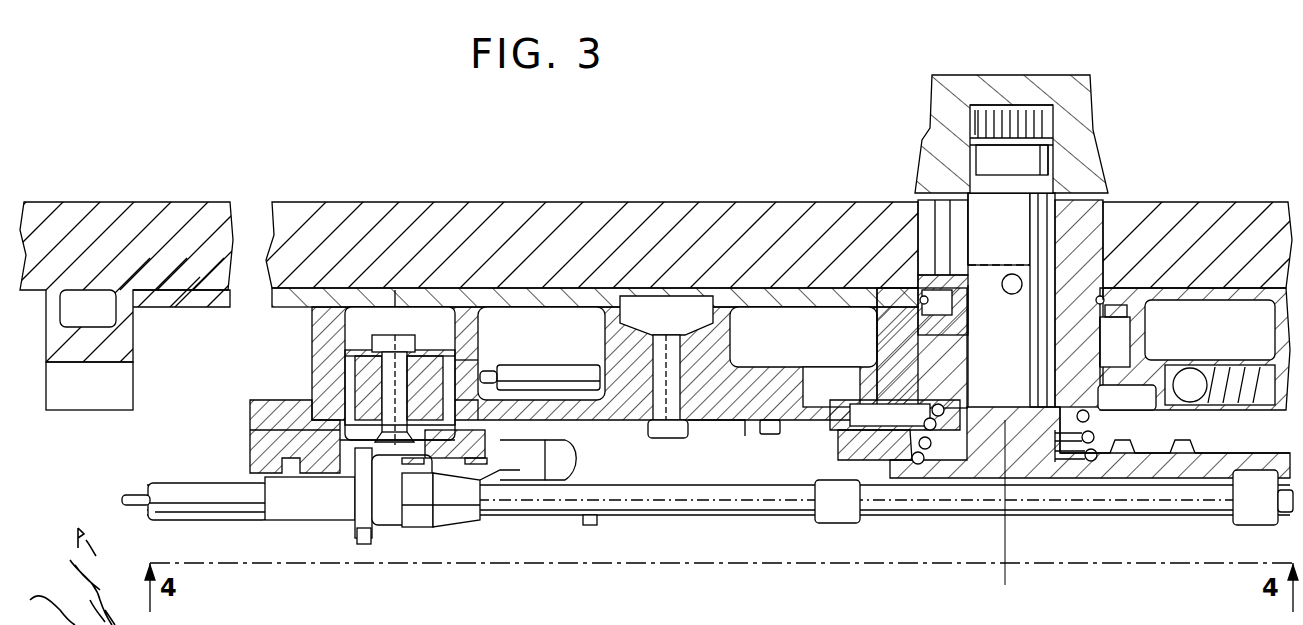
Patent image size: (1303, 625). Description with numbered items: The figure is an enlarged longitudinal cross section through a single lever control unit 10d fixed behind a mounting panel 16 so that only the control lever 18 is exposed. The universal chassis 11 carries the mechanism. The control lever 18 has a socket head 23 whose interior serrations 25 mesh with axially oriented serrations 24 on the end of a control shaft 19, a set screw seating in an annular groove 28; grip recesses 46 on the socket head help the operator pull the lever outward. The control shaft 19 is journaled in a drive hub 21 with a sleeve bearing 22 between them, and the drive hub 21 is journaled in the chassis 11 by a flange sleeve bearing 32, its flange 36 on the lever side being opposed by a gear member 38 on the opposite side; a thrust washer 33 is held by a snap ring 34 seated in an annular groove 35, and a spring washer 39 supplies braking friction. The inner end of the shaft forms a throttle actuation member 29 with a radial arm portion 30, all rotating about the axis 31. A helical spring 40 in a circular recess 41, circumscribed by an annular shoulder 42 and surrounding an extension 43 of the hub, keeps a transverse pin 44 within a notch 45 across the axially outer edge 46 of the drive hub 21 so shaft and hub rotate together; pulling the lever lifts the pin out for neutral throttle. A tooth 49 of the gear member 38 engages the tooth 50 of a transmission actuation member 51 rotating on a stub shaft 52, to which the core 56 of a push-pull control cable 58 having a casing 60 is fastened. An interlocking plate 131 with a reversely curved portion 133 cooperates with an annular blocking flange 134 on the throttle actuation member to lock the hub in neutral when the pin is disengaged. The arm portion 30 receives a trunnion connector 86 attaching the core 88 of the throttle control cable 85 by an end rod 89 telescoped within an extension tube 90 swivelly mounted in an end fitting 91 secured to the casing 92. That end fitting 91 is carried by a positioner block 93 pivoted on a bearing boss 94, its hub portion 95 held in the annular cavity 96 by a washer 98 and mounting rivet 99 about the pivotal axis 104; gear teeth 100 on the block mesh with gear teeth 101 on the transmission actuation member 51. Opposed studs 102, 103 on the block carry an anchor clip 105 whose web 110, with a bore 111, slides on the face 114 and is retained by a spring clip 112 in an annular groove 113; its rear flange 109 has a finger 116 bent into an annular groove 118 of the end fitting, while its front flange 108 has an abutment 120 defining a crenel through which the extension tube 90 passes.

The control unit 10d is at (745, 518).
The universal chassis 11 is at (520, 288).
The mounting panel 16 is at (735, 220).
The control lever 18 is at (1015, 72).
The control shaft 19 is at (1011, 300).
The drive hub 21 is at (967, 330).
The sleeve bearing 22 is at (1062, 270).
The socket head 23 is at (1082, 98).
The serrations 24 is at (1048, 127).
The serrations 25 is at (972, 118).
The annular groove 28 is at (1052, 167).
The throttle actuation member 29 is at (965, 482).
The throttle actuating arm portion 30 is at (1212, 482).
The axis 31 is at (1012, 550).
The flange sleeve bearing 32 is at (1132, 344).
The thrust washer 33 is at (1127, 313).
The snap ring 34 is at (1103, 300).
The annular groove 35 is at (943, 305).
The flange 36 is at (1108, 320).
The gear member 38 is at (903, 377).
The spring washer 39 is at (1186, 389).
The helical spring 40 is at (1094, 430).
The circular recess 41 is at (1075, 492).
The annular shoulder 42 is at (1140, 440).
The extension 43 is at (1058, 434).
The pin 44 is at (1006, 294).
The notch 45 is at (1031, 300).
The axially outer edge 46 is at (924, 144).
The tooth 49 is at (790, 434).
The tooth 50 is at (865, 380).
The transmission actuation member 51 is at (760, 406).
The stub shaft 52 is at (690, 426).
The core 56 is at (525, 372).
The push-pull control cable 58 is at (585, 360).
The casing 60 is at (540, 360).
The push-pull throttle control cable 85 is at (176, 518).
The trunnion connector 86 is at (1265, 524).
The core 88 is at (135, 494).
The end rod 89 is at (980, 502).
The extension tube 90 is at (632, 502).
The end fitting 91 is at (300, 512).
The casing 92 is at (178, 483).
The positioner block 93 is at (345, 444).
The bearing boss 94 is at (345, 395).
The hub portion 95 is at (370, 380).
The annular cavity 96 is at (460, 366).
The washer 98 is at (362, 345).
The mounting rivet 99 is at (398, 345).
The gear teeth 100 is at (560, 366).
The gear teeth 101 is at (500, 412).
The stud 102 is at (495, 502).
The stud 103 is at (275, 454).
The pivotal axis 104 is at (393, 302).
The anchor clip 105 is at (563, 452).
The front flange 108 is at (582, 478).
The rear flange 109 is at (365, 472).
The web 110 is at (425, 517).
The bore 111 is at (467, 444).
The spring clip 112 is at (441, 500).
The annular groove 113 is at (240, 492).
The face 114 is at (345, 434).
The finger 116 is at (362, 547).
The annular groove 118 is at (356, 522).
The abutment 120 is at (588, 527).
The interlocking plate 131 is at (733, 426).
The reversely curved portion 133 is at (895, 420).
The annular blocking flange 134 is at (840, 442).